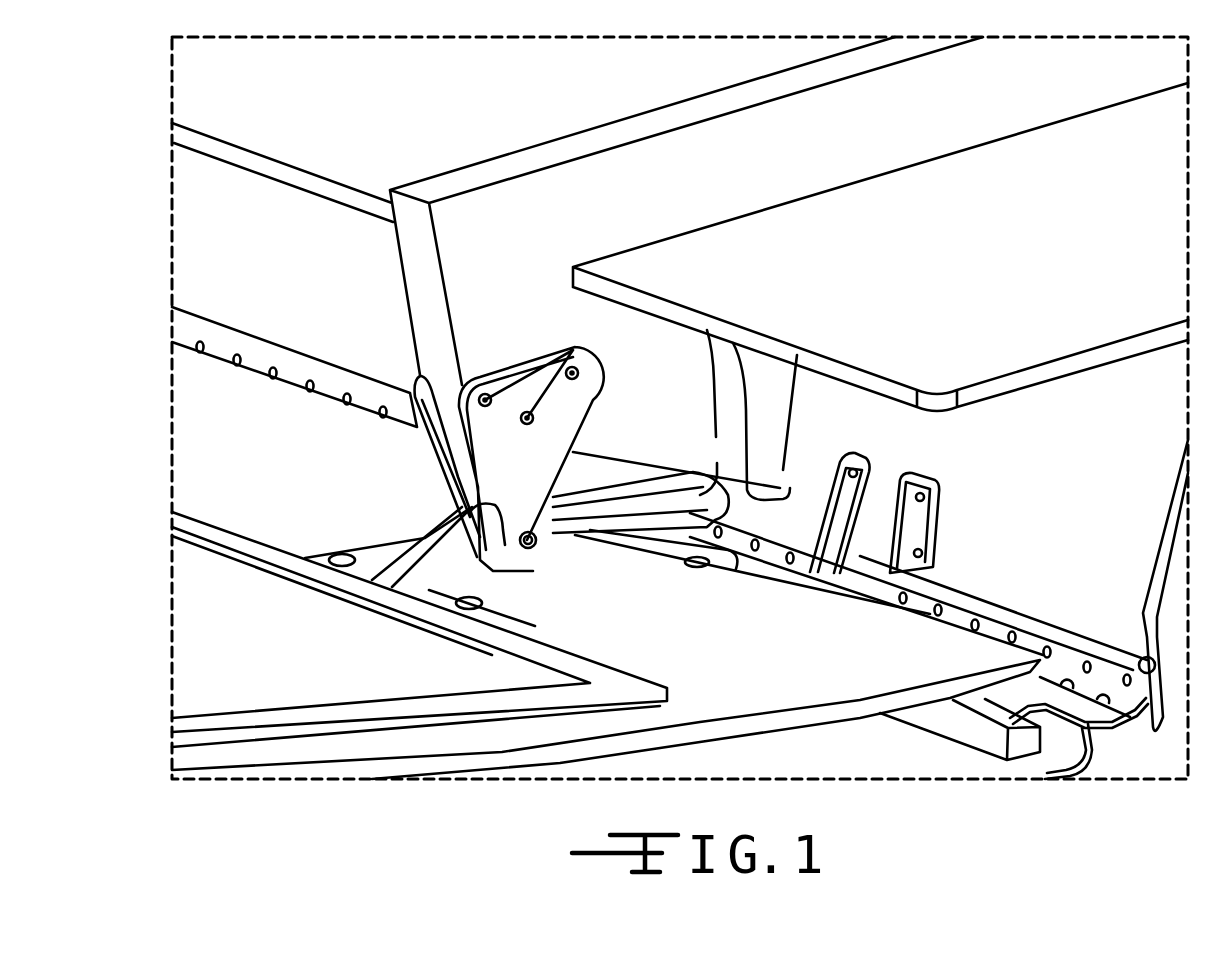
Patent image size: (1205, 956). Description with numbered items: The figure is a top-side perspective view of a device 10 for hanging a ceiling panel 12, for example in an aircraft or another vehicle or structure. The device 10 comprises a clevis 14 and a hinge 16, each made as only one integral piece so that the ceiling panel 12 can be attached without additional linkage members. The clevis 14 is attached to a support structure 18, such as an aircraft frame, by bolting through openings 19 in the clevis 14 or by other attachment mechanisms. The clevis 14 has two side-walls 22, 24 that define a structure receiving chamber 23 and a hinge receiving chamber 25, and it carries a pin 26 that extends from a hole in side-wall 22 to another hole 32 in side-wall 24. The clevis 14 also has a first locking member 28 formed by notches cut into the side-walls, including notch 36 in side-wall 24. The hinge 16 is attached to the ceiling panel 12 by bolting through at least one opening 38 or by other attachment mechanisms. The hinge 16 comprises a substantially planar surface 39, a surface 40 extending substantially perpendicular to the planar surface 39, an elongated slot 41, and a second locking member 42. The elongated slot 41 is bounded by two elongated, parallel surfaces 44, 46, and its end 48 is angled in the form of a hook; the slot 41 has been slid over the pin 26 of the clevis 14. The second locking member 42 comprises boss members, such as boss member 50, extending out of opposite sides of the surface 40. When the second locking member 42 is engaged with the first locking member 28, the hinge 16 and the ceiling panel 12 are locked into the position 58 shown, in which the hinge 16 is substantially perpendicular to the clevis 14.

The device for hanging a ceiling panel 10 is at (627, 371).
The ceiling panel 12 is at (752, 705).
The clevis 14 is at (517, 370).
The hinge 16 is at (667, 672).
The support structure 18 is at (470, 300).
The openings 19 is at (577, 348).
The side-wall 22 is at (392, 396).
The structure receiving chamber 23 is at (447, 427).
The side-wall 24 is at (483, 398).
The hinge receiving chamber 25 is at (457, 465).
The pin 26 is at (522, 532).
The first locking member 28 is at (395, 613).
The hole 32 is at (527, 592).
The notch 36 is at (465, 505).
The opening 38 is at (342, 556).
The substantially planar surface 39 is at (600, 575).
The surface 40 is at (319, 595).
The elongated slot 41 is at (719, 464).
The second locking member 42 is at (518, 562).
The elongated parallel surface 44 is at (650, 492).
The elongated parallel surface 46 is at (767, 541).
The end of the elongated slot 48 is at (782, 498).
The boss member 50 is at (516, 555).
The position 58 is at (608, 437).